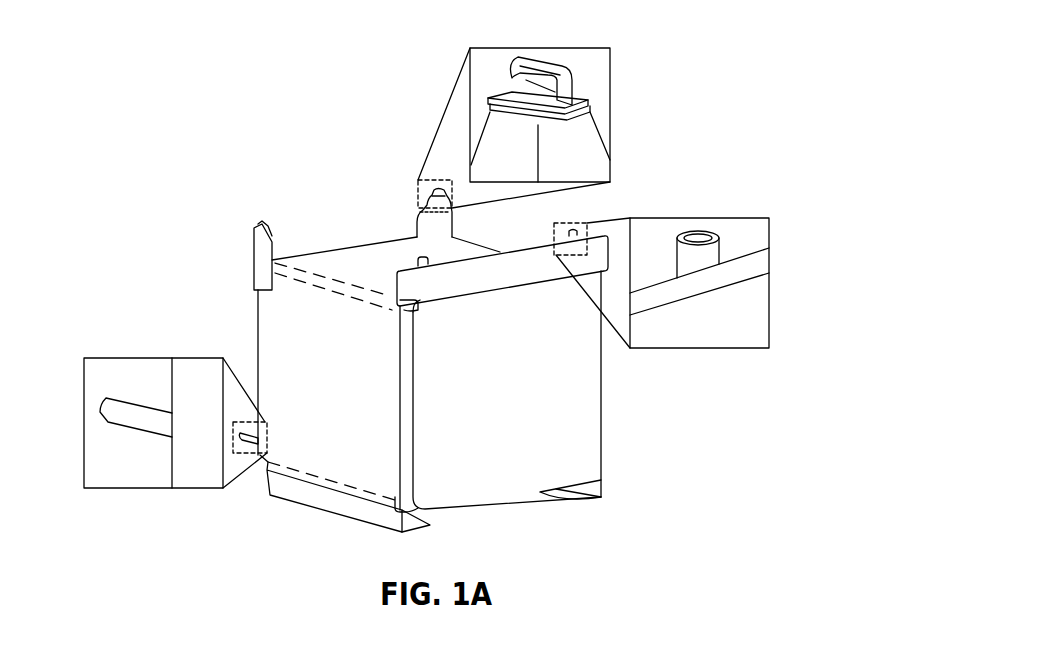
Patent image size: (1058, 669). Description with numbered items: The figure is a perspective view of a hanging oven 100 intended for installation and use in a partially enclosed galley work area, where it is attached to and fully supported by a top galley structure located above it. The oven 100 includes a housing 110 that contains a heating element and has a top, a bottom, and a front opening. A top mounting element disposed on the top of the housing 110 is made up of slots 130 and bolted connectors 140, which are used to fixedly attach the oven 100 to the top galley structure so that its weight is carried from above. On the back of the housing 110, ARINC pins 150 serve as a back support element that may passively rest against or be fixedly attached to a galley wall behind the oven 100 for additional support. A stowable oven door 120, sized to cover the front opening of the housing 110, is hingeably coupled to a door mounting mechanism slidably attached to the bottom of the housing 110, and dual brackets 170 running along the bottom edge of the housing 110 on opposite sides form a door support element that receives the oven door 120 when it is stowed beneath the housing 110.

The hanging oven 100 is at (372, 175).
The housing 110 is at (352, 400).
The stowable oven door 120 is at (550, 393).
The slots 130 is at (258, 224).
The bolted connectors 140 is at (580, 226).
The ARINC pins 150 is at (255, 432).
The dual brackets 170 is at (333, 502).